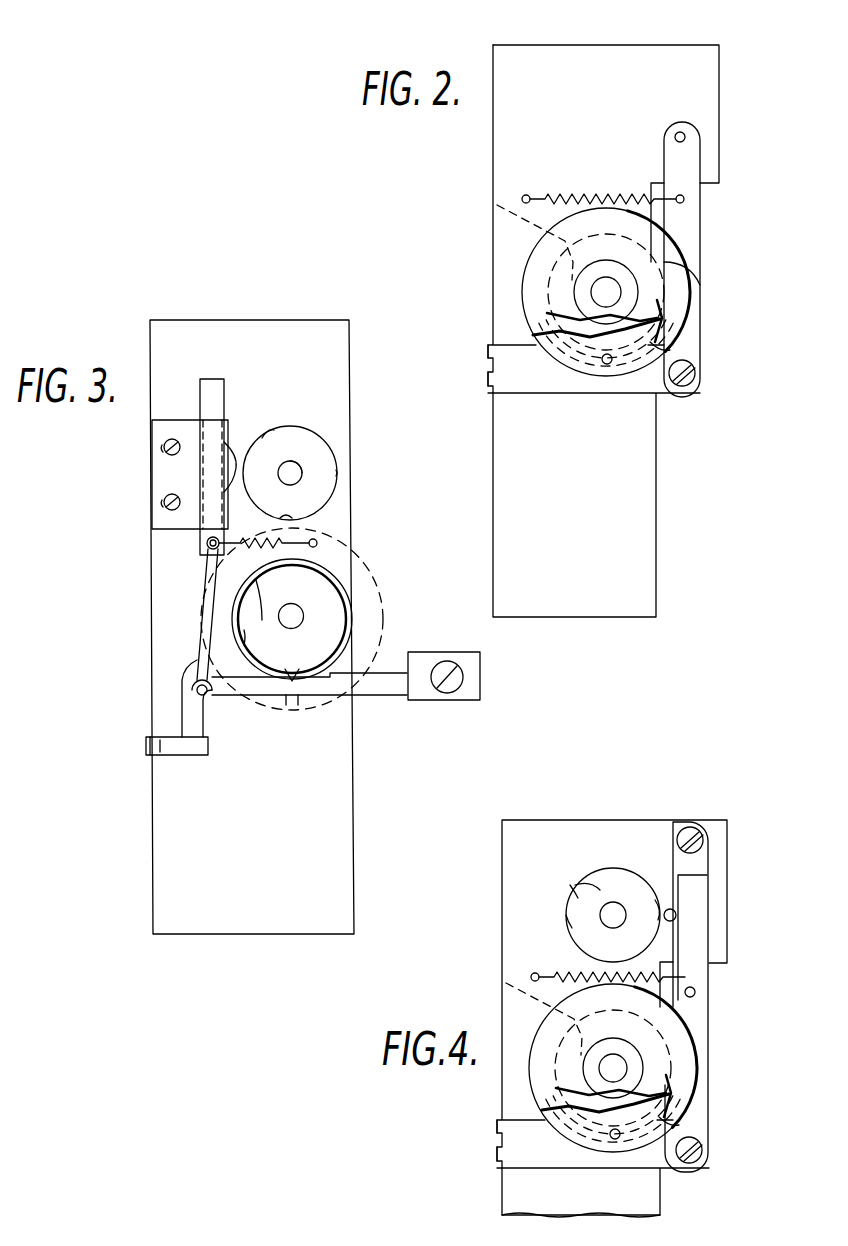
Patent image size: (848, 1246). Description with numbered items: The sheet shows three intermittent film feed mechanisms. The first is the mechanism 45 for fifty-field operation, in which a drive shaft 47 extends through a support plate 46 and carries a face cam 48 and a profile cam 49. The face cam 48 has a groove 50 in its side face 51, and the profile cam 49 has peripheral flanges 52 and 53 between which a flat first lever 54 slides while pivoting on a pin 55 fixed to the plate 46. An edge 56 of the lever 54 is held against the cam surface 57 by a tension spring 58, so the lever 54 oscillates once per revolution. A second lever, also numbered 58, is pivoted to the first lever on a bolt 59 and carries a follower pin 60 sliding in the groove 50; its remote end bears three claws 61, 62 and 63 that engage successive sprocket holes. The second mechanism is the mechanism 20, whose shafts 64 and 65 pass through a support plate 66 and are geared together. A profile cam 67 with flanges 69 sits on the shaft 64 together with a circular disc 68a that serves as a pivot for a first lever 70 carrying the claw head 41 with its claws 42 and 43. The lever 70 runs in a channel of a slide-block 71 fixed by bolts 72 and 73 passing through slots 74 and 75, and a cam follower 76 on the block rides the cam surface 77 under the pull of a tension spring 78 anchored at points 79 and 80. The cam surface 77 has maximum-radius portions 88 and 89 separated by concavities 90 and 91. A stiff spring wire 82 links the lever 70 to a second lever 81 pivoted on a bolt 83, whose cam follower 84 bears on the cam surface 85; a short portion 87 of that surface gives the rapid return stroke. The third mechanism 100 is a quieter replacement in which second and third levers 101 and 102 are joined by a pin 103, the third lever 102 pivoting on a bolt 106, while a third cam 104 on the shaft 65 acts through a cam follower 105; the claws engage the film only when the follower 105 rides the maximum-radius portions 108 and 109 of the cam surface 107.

In FIG. 3, the intermittent feed mechanism 20 is at (140, 572).
In FIG. 3, the claw head 41 is at (170, 745).
In FIG. 3, the claw 42 is at (152, 738).
In FIG. 3, the claw 43 is at (152, 753).
In FIG. 2, the intermittent feed mechanism 45 is at (684, 37).
In FIG. 2, the support plate 46 is at (520, 121).
In FIG. 4, the support plate 46 is at (593, 1018).
In FIG. 2, the drive shaft 47 is at (600, 292).
In FIG. 4, the drive shaft 47 is at (566, 1071).
In FIG. 2, the face cam 48 is at (538, 339).
In FIG. 4, the face cam 48 is at (592, 1148).
In FIG. 2, the profile cam 49 is at (565, 268).
In FIG. 4, the profile cam 49 is at (580, 1068).
In FIG. 2, the groove 50 is at (670, 351).
In FIG. 4, the groove 50 is at (708, 1115).
In FIG. 2, the side face 51 is at (535, 315).
In FIG. 4, the side face 51 is at (613, 1149).
In FIG. 2, the peripheral flange 52 is at (662, 320).
In FIG. 4, the peripheral flange 52 is at (711, 1092).
In FIG. 2, the peripheral flange 53 is at (690, 287).
In FIG. 2, the first lever 54 is at (692, 250).
In FIG. 2, the pivot pin 55 is at (680, 132).
In FIG. 2, the edge 56 is at (672, 226).
In FIG. 4, the edge 56 is at (704, 998).
In FIG. 2, the cam surface 57 is at (497, 205).
In FIG. 4, the cam surface 57 is at (522, 1009).
In FIG. 2, the tension spring 58 is at (568, 196).
In FIG. 4, the tension spring 58 is at (586, 1071).
In FIG. 2, the bolt 59 is at (696, 381).
In FIG. 4, the bolt 59 is at (721, 1151).
In FIG. 2, the follower pin 60 is at (607, 364).
In FIG. 4, the follower pin 60 is at (612, 1165).
In FIG. 2, the claw 61 is at (490, 346).
In FIG. 4, the claw 61 is at (470, 1120).
In FIG. 2, the claw 62 is at (490, 373).
In FIG. 4, the claw 62 is at (470, 1152).
In FIG. 2, the claw 63 is at (492, 394).
In FIG. 4, the claw 63 is at (477, 1185).
In FIG. 3, the shaft 64 is at (298, 618).
In FIG. 3, the shaft 65 is at (295, 478).
In FIG. 4, the shaft 65 is at (612, 905).
In FIG. 3, the support plate 66 is at (318, 330).
In FIG. 3, the profile cam 67 is at (332, 617).
In FIG. 3, the circular disc 68a is at (345, 580).
In FIG. 3, the flange 69 is at (372, 565).
In FIG. 3, the first lever 70 is at (190, 665).
In FIG. 3, the slide-block 71 is at (188, 420).
In FIG. 3, the bolt 72 is at (165, 450).
In FIG. 3, the bolt 73 is at (170, 501).
In FIG. 3, the slot 74 is at (160, 447).
In FIG. 3, the slot 75 is at (170, 508).
In FIG. 3, the cam follower 76 is at (236, 460).
In FIG. 3, the cam surface 77 is at (313, 430).
In FIG. 3, the tension spring 78 is at (271, 600).
In FIG. 3, the point 79 is at (207, 545).
In FIG. 3, the point 80 is at (317, 545).
In FIG. 3, the second lever 81 is at (305, 697).
In FIG. 3, the stiff spring wire 82 is at (205, 585).
In FIG. 3, the bolt 83 is at (447, 692).
In FIG. 3, the cam follower 84 is at (282, 690).
In FIG. 3, the cam surface 85 is at (347, 638).
In FIG. 3, the portion 87 is at (244, 640).
In FIG. 3, the portion 88 is at (248, 493).
In FIG. 3, the portion 89 is at (338, 471).
In FIG. 3, the concavity 90 is at (285, 518).
In FIG. 3, the concavity 91 is at (272, 434).
In FIG. 4, the intermittent feed mechanism 100 is at (451, 995).
In FIG. 4, the second lever 101 is at (713, 997).
In FIG. 4, the third lever 102 is at (695, 870).
In FIG. 4, the pin 103 is at (697, 992).
In FIG. 4, the third cam 104 is at (595, 890).
In FIG. 4, the cam follower 105 is at (680, 915).
In FIG. 4, the bolt 106 is at (691, 829).
In FIG. 4, the cam surface 107 is at (579, 890).
In FIG. 4, the maximum radius portion 108 is at (567, 921).
In FIG. 4, the maximum radius portion 109 is at (660, 905).